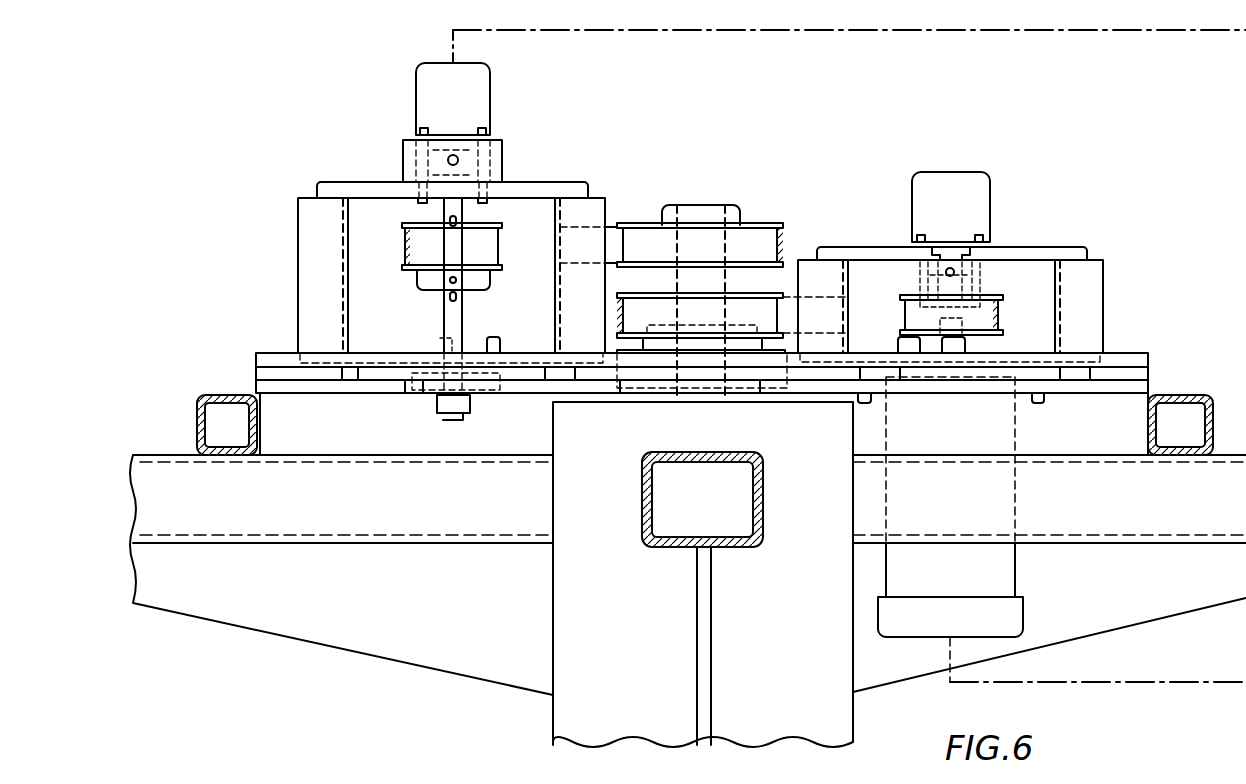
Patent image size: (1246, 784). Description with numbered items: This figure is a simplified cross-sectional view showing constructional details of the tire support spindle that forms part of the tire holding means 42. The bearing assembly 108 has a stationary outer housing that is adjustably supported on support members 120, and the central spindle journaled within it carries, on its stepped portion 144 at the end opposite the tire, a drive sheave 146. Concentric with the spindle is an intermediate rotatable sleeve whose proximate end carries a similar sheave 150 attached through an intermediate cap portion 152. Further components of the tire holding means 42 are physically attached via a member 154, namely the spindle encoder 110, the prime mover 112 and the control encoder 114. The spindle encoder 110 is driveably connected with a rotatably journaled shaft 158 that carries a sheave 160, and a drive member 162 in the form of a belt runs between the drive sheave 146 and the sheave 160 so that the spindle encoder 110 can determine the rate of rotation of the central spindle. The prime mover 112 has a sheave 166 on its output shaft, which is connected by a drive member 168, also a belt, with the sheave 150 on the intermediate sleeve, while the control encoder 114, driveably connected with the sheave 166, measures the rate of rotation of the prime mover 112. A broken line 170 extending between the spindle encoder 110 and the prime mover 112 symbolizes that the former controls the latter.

The tire holding means 42 is at (698, 193).
The bearing assembly 108 is at (650, 616).
The spindle encoder 110 is at (437, 95).
The prime mover 112 is at (995, 564).
The control encoder 114 is at (965, 190).
The support members 120 is at (433, 520).
The stepped portion 144 is at (706, 279).
The drive sheave 146 is at (752, 237).
The sheave 150 is at (639, 319).
The intermediate cap portion 152 is at (660, 342).
The member 154 is at (765, 500).
The shaft 158 is at (453, 316).
The sheave 160 is at (420, 243).
The drive member 162 is at (530, 250).
The sheave 166 is at (993, 308).
The drive member 168 is at (878, 308).
The broken line 170 is at (1245, 120).